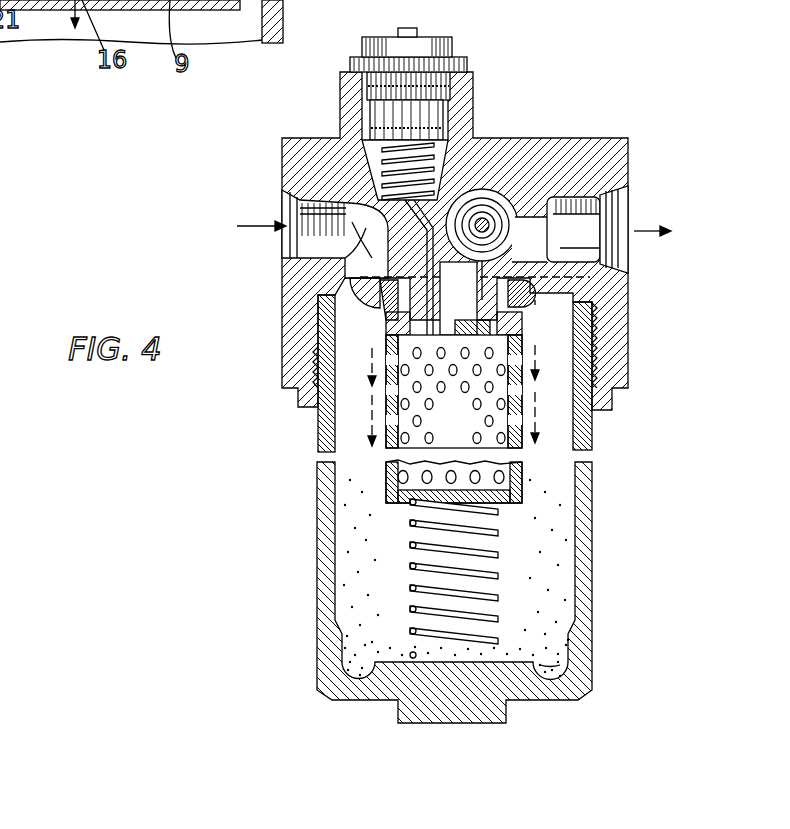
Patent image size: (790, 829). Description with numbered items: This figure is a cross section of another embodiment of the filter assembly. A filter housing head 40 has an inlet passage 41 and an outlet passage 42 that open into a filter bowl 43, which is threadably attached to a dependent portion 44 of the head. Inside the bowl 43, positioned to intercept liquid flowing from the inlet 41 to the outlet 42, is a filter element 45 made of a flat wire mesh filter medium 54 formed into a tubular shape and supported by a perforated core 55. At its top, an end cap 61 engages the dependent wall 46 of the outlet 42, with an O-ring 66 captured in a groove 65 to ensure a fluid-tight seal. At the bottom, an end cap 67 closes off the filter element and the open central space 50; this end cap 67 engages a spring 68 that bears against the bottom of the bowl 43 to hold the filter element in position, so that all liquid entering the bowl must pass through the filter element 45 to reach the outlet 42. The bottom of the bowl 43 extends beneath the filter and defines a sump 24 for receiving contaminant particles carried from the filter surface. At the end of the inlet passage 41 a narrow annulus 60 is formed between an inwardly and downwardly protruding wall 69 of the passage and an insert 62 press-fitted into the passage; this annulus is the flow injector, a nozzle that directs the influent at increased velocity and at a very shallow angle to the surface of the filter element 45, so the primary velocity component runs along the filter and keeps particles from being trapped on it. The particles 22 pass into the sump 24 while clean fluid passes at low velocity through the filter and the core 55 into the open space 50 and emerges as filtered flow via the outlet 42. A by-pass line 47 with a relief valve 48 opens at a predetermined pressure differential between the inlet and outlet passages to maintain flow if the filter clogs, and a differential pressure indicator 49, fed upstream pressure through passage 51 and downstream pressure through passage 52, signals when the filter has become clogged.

The filter housing head 40 is at (565, 142).
The inlet passage 41 is at (333, 235).
The outlet passage 42 is at (538, 212).
The filter bowl 43 is at (318, 447).
The dependent portion 44 is at (292, 356).
The filter element 45 is at (552, 437).
The dependent wall 46 is at (468, 340).
The by-pass line 47 is at (470, 197).
The relief valve 48 is at (484, 222).
The differential pressure indicator 49 is at (432, 50).
The open central space 50 is at (440, 445).
The passage 51 is at (355, 140).
The passage 52 is at (445, 196).
The flat wire mesh filter medium 54 is at (530, 355).
The perforated core 55 is at (516, 420).
The narrow annulus 60 is at (362, 303).
The end cap 61 is at (400, 290).
The insert 62 is at (386, 292).
The groove 65 is at (430, 318).
The O-ring 66 is at (498, 322).
The end cap 67 is at (516, 504).
The spring 68 is at (497, 577).
The protruding wall 69 is at (363, 240).
The particles 22 is at (345, 660).
The sump 24 is at (562, 653).